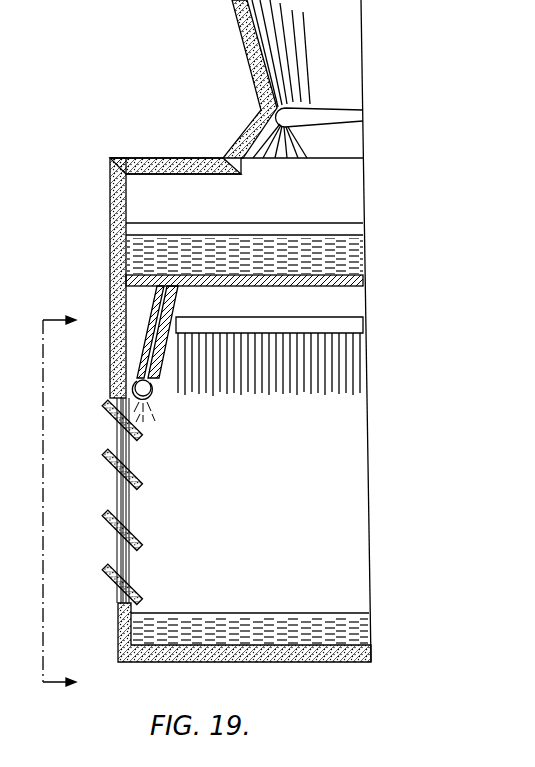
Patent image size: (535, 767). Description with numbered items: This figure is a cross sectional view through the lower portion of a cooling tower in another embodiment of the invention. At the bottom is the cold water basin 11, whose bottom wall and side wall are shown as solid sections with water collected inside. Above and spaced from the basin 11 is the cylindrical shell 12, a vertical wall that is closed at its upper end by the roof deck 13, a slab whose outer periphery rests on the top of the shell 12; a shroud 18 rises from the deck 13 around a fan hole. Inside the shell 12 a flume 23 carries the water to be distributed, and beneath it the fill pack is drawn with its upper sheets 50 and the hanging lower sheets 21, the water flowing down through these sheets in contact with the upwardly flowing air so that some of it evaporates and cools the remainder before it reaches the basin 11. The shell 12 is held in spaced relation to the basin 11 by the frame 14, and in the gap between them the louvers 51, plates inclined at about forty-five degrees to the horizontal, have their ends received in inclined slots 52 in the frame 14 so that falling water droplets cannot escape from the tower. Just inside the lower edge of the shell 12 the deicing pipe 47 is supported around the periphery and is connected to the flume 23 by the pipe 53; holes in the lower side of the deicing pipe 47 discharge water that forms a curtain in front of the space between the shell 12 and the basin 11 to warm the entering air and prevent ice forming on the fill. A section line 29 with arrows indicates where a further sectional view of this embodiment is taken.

The basin 11 is at (119, 612).
The cylindrical shell 12 is at (110, 204).
The roof deck 13 is at (178, 157).
The frame 14 is at (116, 490).
The shroud 18 is at (232, 42).
The lower sheets 21 is at (254, 386).
The flume 23 is at (291, 222).
The section line 29 is at (68, 501).
The deicing pipe 47 is at (148, 397).
The upper sheets 50 is at (328, 317).
The louvers 51 is at (140, 485).
The inclined slots 52 is at (128, 516).
The pipe 53 is at (178, 301).